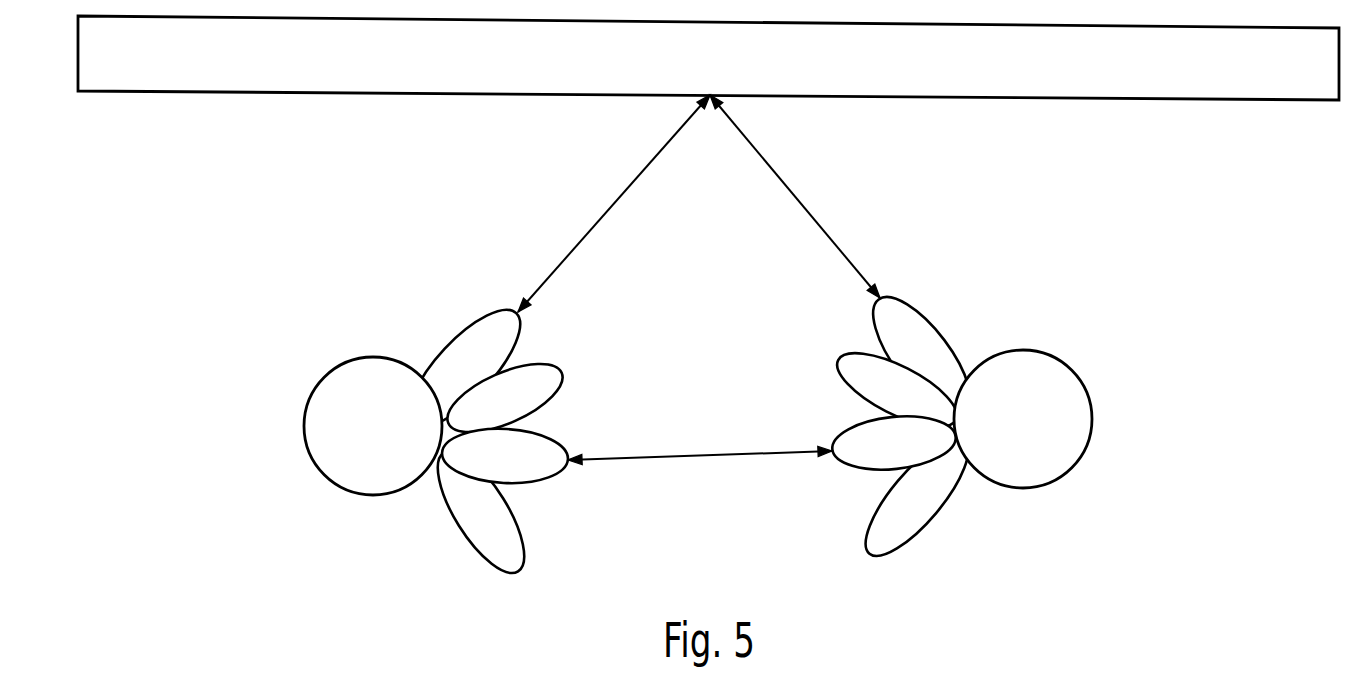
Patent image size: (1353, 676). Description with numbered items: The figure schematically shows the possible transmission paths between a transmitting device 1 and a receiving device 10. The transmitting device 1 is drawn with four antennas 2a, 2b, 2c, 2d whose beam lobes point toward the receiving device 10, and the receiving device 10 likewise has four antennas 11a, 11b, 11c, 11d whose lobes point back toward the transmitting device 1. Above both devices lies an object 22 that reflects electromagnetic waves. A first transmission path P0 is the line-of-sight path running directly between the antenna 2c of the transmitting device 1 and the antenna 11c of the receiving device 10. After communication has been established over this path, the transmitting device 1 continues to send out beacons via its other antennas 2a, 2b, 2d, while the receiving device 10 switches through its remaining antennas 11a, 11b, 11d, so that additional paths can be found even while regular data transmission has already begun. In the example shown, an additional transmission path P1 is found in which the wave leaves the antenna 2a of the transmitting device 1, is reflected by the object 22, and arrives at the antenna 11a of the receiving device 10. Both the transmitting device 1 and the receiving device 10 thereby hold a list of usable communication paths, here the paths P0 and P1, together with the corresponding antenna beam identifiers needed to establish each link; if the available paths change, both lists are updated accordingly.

The transmitting device 1 is at (320, 440).
The antenna 2a is at (480, 373).
The antenna 2b is at (515, 418).
The antenna 2c is at (517, 468).
The antenna 2d is at (495, 528).
The receiving device 10 is at (1055, 442).
The antenna 11a is at (945, 360).
The antenna 11b is at (917, 406).
The antenna 11c is at (907, 462).
The antenna 11d is at (935, 520).
The object 22 is at (723, 73).
The first transmission path P0 is at (687, 456).
The additional transmission path P1 is at (605, 212).